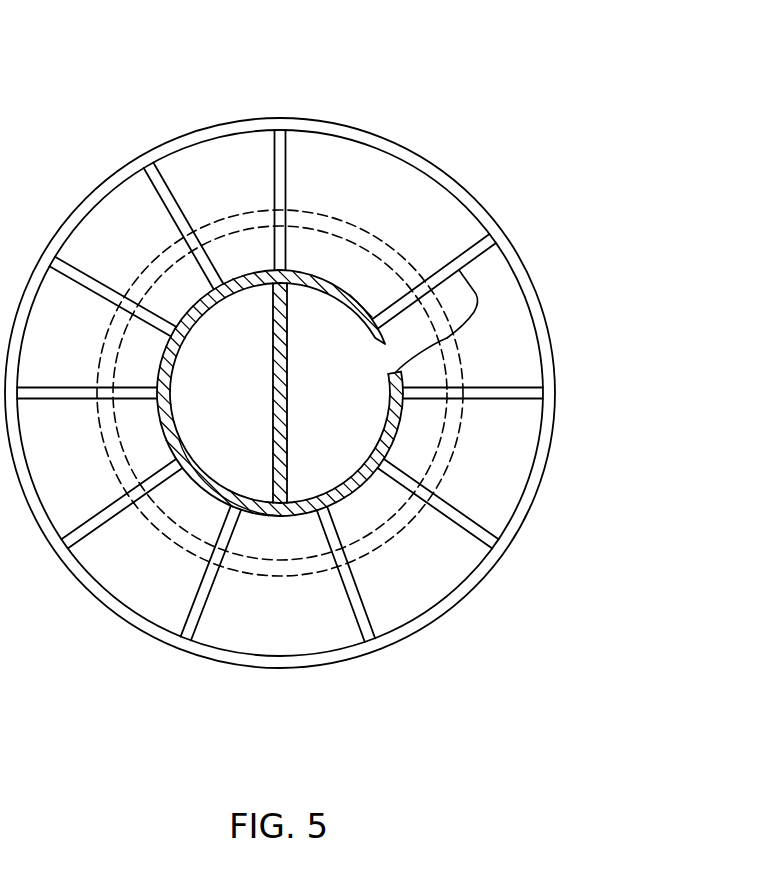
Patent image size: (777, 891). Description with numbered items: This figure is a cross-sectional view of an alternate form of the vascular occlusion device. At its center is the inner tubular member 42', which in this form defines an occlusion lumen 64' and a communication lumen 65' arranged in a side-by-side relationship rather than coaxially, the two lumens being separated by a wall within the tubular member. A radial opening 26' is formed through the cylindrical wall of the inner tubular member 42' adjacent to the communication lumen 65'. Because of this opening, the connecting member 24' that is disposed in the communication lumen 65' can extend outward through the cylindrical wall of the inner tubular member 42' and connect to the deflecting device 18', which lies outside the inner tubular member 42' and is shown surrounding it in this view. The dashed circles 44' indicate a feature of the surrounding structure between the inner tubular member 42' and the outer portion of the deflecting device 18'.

The deflecting device 18' is at (280, 340).
The inner tubular member 42' is at (238, 201).
The annular channel (dashed) 44' is at (330, 335).
The connecting member 24' is at (585, 285).
The radial opening 26' is at (521, 335).
The occlusion lumen 64' is at (280, 393).
The communication lumen 65' is at (358, 393).